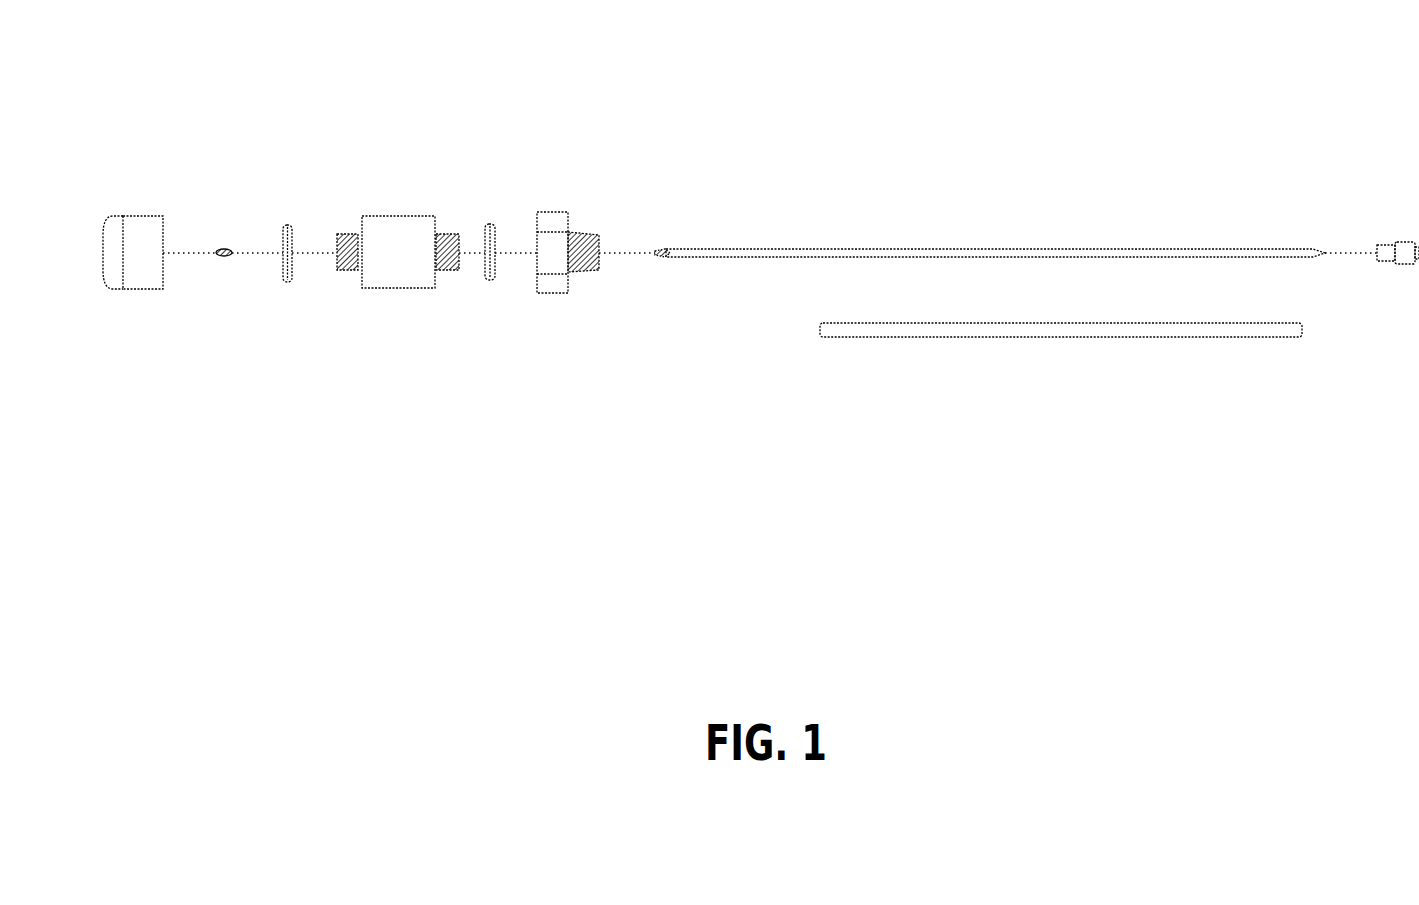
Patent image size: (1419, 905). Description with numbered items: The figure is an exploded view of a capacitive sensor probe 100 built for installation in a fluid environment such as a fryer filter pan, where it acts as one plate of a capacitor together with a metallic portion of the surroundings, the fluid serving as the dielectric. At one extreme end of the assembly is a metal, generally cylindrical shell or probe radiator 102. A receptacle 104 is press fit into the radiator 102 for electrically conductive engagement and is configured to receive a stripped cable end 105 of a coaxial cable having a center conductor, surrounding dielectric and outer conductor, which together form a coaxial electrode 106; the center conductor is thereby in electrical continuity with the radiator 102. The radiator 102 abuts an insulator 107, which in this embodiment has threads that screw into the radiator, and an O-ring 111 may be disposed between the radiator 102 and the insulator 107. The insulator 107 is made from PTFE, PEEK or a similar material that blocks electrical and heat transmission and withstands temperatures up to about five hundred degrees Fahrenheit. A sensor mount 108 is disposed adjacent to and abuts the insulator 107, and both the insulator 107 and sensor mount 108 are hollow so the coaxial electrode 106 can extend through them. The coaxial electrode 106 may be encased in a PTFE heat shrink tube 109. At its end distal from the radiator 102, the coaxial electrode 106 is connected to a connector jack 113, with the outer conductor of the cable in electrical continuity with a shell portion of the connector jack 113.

The sensor probe 100 is at (777, 118).
The probe radiator 102 is at (141, 213).
The receptacle 104 is at (219, 249).
The O-ring 111 is at (290, 224).
The insulator 107 is at (392, 219).
The sensor mount 108 is at (561, 209).
The stripped cable end 105 is at (662, 262).
The coaxial electrode 106 is at (725, 248).
The PTFE heat shrink tube 109 is at (882, 335).
The connector jack 113 is at (1401, 242).